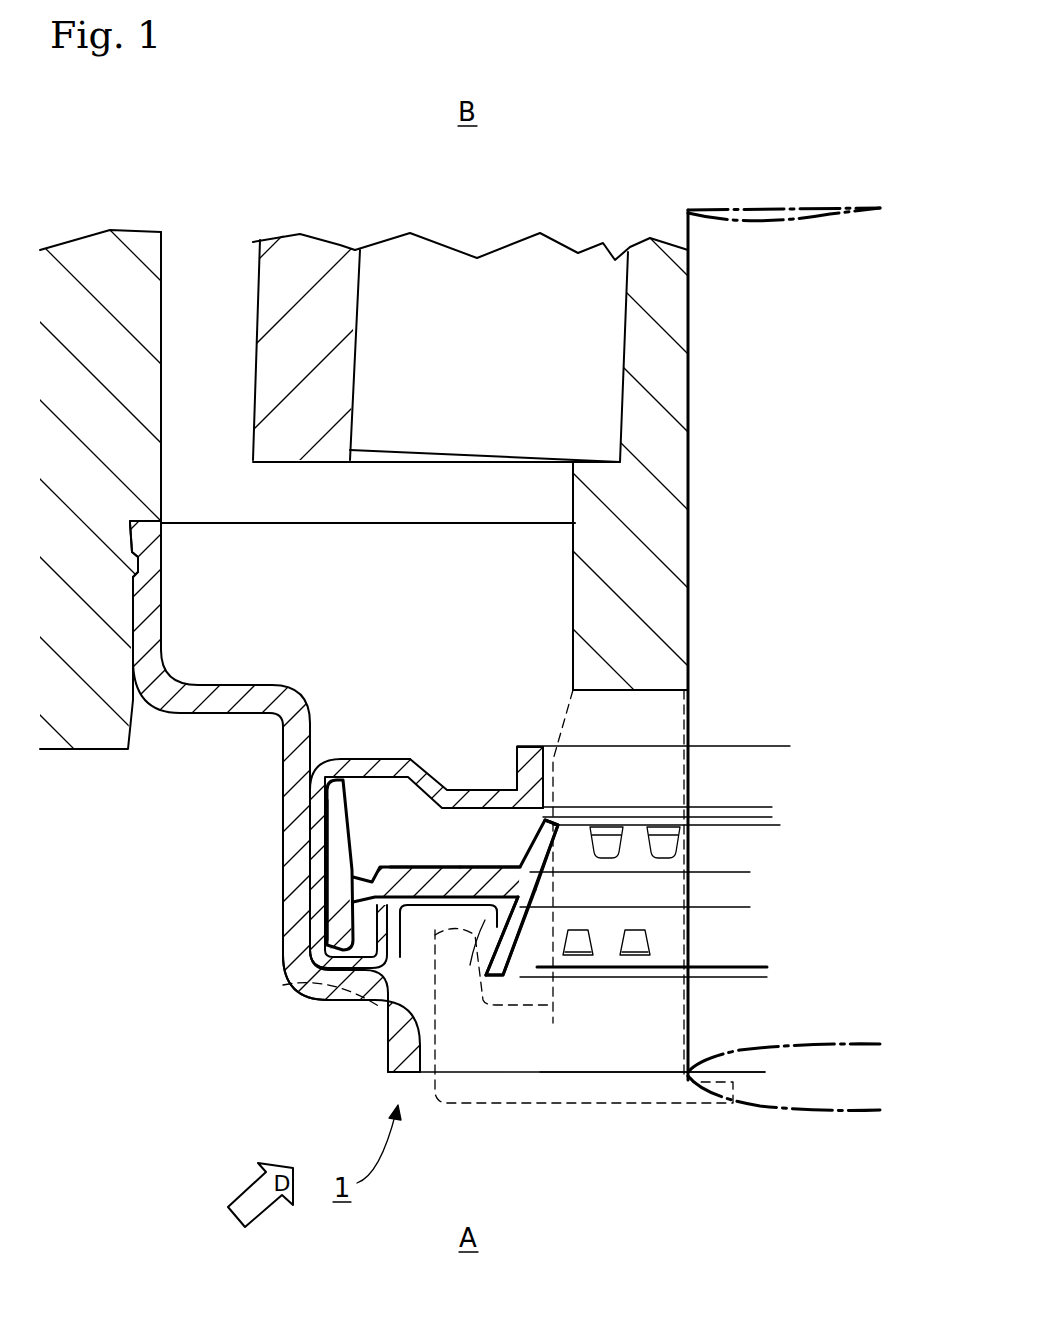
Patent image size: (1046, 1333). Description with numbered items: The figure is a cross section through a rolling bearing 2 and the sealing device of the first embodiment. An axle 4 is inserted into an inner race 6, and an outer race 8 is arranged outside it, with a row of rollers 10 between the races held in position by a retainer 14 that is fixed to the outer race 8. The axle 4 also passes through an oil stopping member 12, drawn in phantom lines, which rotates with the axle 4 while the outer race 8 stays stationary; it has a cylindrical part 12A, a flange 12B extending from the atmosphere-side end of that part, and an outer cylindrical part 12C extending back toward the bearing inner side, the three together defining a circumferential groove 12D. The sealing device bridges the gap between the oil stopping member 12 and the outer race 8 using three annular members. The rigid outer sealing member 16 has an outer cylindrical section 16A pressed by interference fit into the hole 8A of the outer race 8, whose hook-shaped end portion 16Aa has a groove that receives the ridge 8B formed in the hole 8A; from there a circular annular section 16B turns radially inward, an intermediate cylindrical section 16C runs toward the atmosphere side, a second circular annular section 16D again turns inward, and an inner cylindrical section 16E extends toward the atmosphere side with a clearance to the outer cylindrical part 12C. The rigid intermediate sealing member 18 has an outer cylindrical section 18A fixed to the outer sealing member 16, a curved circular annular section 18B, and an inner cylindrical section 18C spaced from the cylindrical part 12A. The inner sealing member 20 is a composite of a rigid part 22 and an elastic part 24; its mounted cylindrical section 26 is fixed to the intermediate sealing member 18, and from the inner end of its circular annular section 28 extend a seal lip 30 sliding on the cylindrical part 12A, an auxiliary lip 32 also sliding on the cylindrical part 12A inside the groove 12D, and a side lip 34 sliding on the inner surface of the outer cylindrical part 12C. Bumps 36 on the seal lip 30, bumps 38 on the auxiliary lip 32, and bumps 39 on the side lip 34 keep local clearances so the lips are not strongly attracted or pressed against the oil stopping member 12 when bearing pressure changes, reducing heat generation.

The rolling bearing 2 is at (404, 180).
The axle 4 is at (762, 206).
The inner race 6 is at (640, 257).
The outer race 8 is at (118, 749).
The hole 8A is at (120, 592).
The ridge 8B is at (145, 560).
The rollers 10 is at (457, 257).
The oil stopping member 12 is at (595, 1105).
The cylindrical part 12A is at (690, 727).
The flange 12B is at (543, 1075).
The outer cylindrical part 12C is at (385, 1015).
The circumferential groove 12D is at (483, 1010).
The retainer 14 is at (296, 245).
The outer sealing member 16 is at (200, 750).
The outer cylindrical section 16A is at (148, 627).
The end portion 16Aa is at (150, 534).
The circular annular section 16B is at (225, 697).
The intermediate cylindrical section 16C is at (290, 797).
The circular annular section 16D is at (303, 1025).
The inner cylindrical section 16E is at (386, 1058).
The intermediate sealing member 18 is at (300, 906).
The outer cylindrical section 18A is at (318, 820).
The circular annular section 18B is at (388, 760).
The inner cylindrical section 18C is at (516, 752).
The inner sealing member 20 is at (315, 893).
The rigid part 22 is at (328, 960).
The elastic part 24 is at (442, 867).
The mounted cylindrical section 26 is at (330, 876).
The circular annular section 28 is at (485, 869).
The seal lip 30 is at (554, 823).
The auxiliary lip 32 is at (543, 972).
The side lip 34 is at (490, 965).
The bumps 36 is at (660, 829).
The bumps 38 is at (578, 954).
The bumps 39 is at (482, 967).